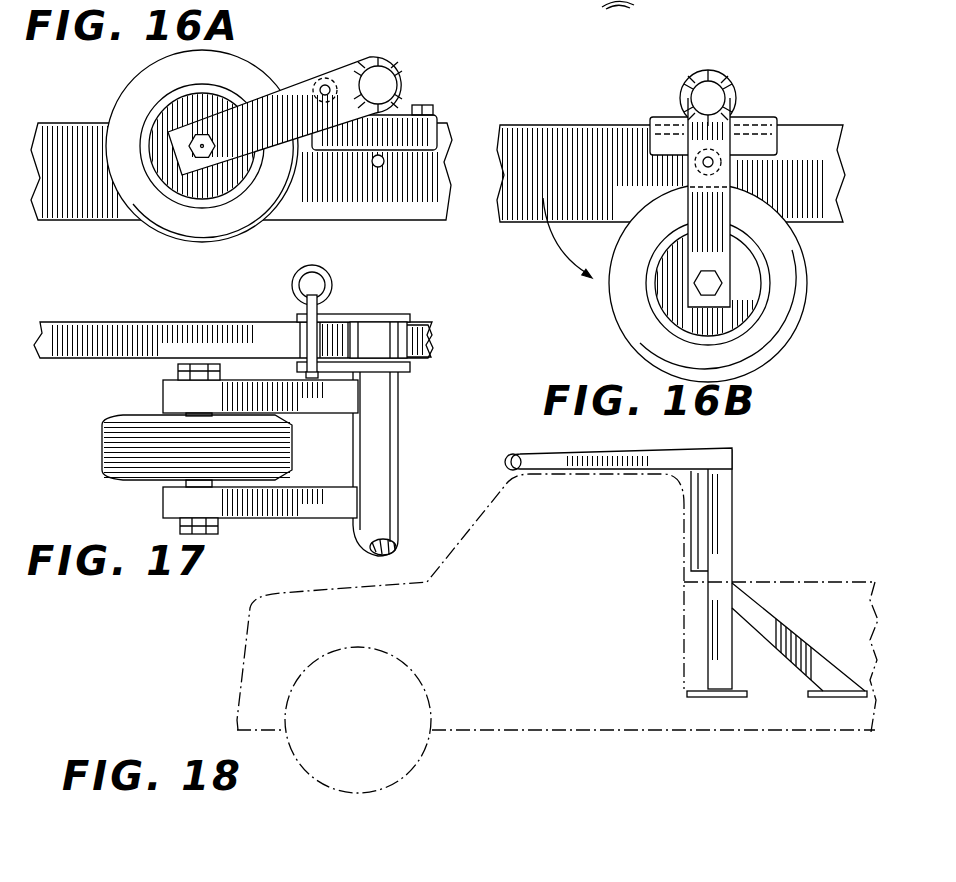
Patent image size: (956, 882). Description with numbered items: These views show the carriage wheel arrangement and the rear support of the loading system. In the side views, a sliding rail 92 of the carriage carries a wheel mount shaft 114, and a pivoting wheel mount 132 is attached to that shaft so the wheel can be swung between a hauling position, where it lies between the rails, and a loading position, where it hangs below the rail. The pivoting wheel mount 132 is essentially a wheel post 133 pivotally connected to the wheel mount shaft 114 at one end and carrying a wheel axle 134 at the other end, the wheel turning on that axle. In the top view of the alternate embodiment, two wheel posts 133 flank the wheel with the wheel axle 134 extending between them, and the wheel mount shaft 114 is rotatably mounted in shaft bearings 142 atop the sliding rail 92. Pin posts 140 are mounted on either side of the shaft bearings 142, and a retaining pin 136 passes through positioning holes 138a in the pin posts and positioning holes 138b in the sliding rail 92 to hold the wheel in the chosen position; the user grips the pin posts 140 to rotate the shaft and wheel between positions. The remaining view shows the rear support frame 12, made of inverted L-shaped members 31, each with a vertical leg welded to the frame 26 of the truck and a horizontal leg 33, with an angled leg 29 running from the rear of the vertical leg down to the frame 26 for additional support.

In FIG. 16A, the sliding rail 92 is at (40, 124).
In FIG. 16B, the sliding rail 92 is at (547, 128).
In FIG. 17, the sliding rail 92 is at (108, 322).
In FIG. 16A, the wheel mount shaft 114 is at (406, 85).
In FIG. 16B, the wheel mount shaft 114 is at (738, 88).
In FIG. 17, the wheel mount shaft 114 is at (393, 430).
In FIG. 16A, the pivoting wheel mount 132 is at (402, 67).
In FIG. 16B, the pivoting wheel mount 132 is at (698, 78).
In FIG. 17, the pivoting wheel mount 132 is at (342, 484).
In FIG. 16B, the wheel post 133 is at (724, 257).
In FIG. 17, the wheel post 133 is at (165, 393).
In FIG. 16A, the wheel axle 134 is at (170, 128).
In FIG. 16B, the wheel axle 134 is at (720, 283).
In FIG. 17, the wheel axle 134 is at (163, 493).
In FIG. 17, the retaining pin 136 is at (310, 272).
In FIG. 16A, the positioning hole 138a is at (337, 78).
In FIG. 17, the positioning hole 138a is at (300, 318).
In FIG. 16A, the positioning hole 138b is at (378, 168).
In FIG. 17, the positioning hole 138b is at (340, 320).
In FIG. 17, the pin post 140 is at (398, 314).
In FIG. 17, the shaft bearing 142 is at (412, 345).
In FIG. 18, the rear support frame 12 is at (738, 514).
In FIG. 18, the frame 26 is at (712, 698).
In FIG. 18, the angled leg 29 is at (772, 622).
In FIG. 18, the inverted L-shaped member 31 is at (712, 516).
In FIG. 18, the horizontal leg 33 is at (693, 455).